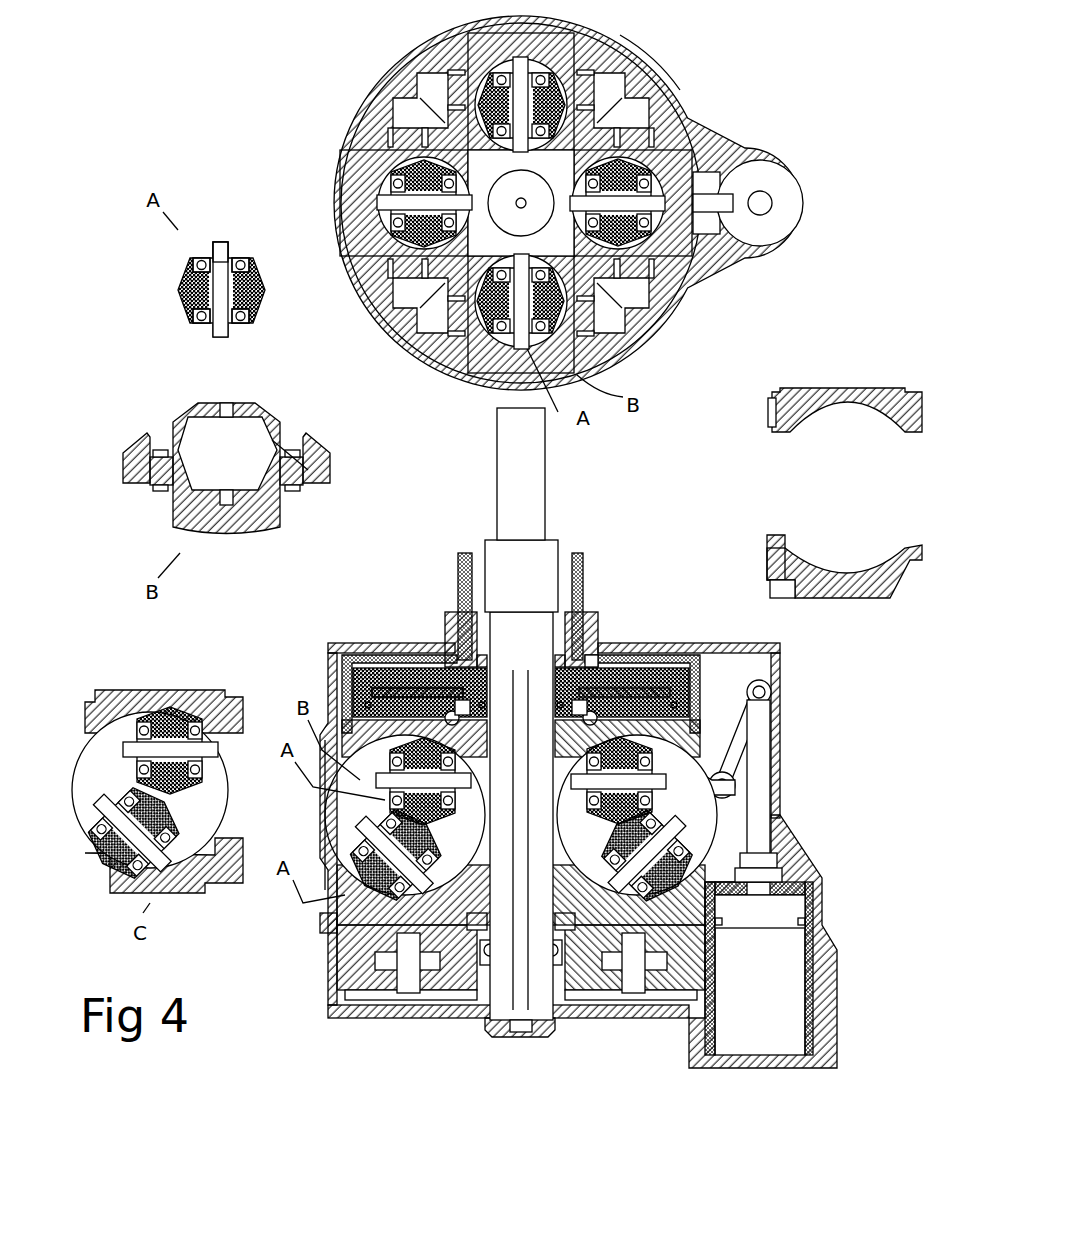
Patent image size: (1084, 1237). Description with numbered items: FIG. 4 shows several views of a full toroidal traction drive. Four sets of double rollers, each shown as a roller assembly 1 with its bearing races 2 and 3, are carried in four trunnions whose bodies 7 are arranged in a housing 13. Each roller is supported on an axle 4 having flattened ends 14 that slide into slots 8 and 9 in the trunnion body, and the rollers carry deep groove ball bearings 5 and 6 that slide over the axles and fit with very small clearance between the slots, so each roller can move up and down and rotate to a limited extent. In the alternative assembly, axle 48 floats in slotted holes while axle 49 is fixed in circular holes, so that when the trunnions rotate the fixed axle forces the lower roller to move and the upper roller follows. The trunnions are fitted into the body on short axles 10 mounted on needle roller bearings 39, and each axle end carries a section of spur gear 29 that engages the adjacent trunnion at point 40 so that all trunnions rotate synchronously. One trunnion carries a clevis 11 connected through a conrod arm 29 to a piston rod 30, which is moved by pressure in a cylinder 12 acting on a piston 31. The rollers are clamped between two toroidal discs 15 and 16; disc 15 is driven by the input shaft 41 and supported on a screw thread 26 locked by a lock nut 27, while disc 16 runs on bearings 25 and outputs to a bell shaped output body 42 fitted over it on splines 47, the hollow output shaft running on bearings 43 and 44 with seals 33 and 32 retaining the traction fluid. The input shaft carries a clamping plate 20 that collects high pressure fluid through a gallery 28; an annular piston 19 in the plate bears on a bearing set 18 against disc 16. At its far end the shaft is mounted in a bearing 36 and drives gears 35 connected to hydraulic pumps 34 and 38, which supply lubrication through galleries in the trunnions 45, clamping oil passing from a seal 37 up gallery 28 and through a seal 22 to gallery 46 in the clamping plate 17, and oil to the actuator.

The magnet unit 1 is at (409, 488).
The bearing 2 is at (173, 262).
The bearing 3 is at (179, 315).
The axle 4 is at (394, 590).
The deep groove ball bearing 5 is at (259, 322).
The deep groove ball bearing 6 is at (260, 262).
The stator block 7 is at (212, 471).
The slot 8 is at (245, 527).
The slot 9 is at (202, 393).
The short axle 10 is at (580, 86).
The clevis 11 is at (713, 449).
The cylinder 12 is at (791, 584).
The housing 13 is at (582, 542).
The flattened end 14 is at (269, 545).
The toroidal disc 15 is at (844, 563).
The toroidal disc 16 is at (847, 416).
The clamping plate 17 is at (547, 665).
The bearing set 18 is at (558, 698).
The annular piston 19 is at (480, 669).
The clamping plate 20 is at (579, 736).
The seal 22 is at (521, 698).
The bearings 25 is at (746, 417).
The screw thread 26 is at (742, 546).
The lock nut 27 is at (811, 605).
The gallery 28 is at (521, 805).
The section of spur gear 29 is at (525, 416).
The piston rod 30 is at (785, 791).
The piston 31 is at (760, 931).
The seal 32 is at (432, 606).
The seal 33 is at (429, 631).
The hydraulic pump 34 is at (357, 963).
The gears 35 is at (521, 997).
The bearing 36 is at (505, 1005).
The seal 37 is at (531, 1049).
The hydraulic pump 38 is at (634, 1001).
The needle roller bearings 39 is at (305, 502).
The point of engagement 40 is at (496, 197).
The input shaft 41 is at (496, 510).
The bell shaped output body 42 is at (600, 594).
The bearing 43 is at (595, 620).
The bearing 44 is at (613, 636).
The galleries in the trunnions 45 is at (291, 435).
The gallery 46 is at (397, 642).
The splines 47 is at (301, 829).
The axle 48 is at (150, 779).
The axle 49 is at (150, 875).